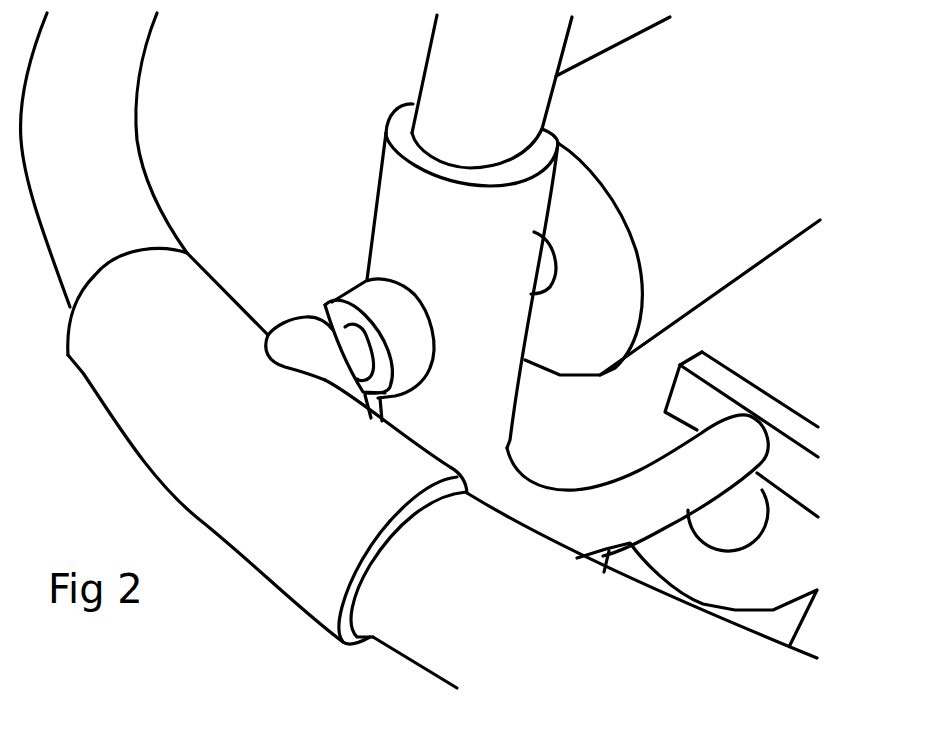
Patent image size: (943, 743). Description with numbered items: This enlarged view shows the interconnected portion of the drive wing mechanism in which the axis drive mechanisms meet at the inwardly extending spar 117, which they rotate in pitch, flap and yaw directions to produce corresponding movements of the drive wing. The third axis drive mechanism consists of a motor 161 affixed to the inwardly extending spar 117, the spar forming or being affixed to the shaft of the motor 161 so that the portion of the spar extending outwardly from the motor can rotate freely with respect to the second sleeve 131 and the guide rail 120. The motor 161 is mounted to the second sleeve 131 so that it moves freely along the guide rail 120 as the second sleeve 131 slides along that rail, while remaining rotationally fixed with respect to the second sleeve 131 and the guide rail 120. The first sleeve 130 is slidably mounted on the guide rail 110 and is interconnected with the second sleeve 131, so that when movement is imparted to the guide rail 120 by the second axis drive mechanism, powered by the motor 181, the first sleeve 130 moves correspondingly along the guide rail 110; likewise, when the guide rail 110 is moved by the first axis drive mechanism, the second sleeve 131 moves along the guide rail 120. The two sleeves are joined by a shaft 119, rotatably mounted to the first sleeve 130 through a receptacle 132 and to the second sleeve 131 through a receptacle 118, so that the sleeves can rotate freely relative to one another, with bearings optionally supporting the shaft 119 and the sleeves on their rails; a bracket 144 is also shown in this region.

The guide rail 110 is at (104, 160).
The guide rail 120 is at (590, 293).
The first sleeve 130 is at (442, 468).
The second sleeve 131 is at (462, 276).
The receptacle 132 is at (303, 343).
The shaft 119 is at (347, 338).
The receptacle 118 is at (373, 296).
The motor 161 is at (672, 196).
The inwardly extending spar 117 is at (548, 268).
The bracket 144 is at (760, 517).
The motor 181 is at (765, 625).